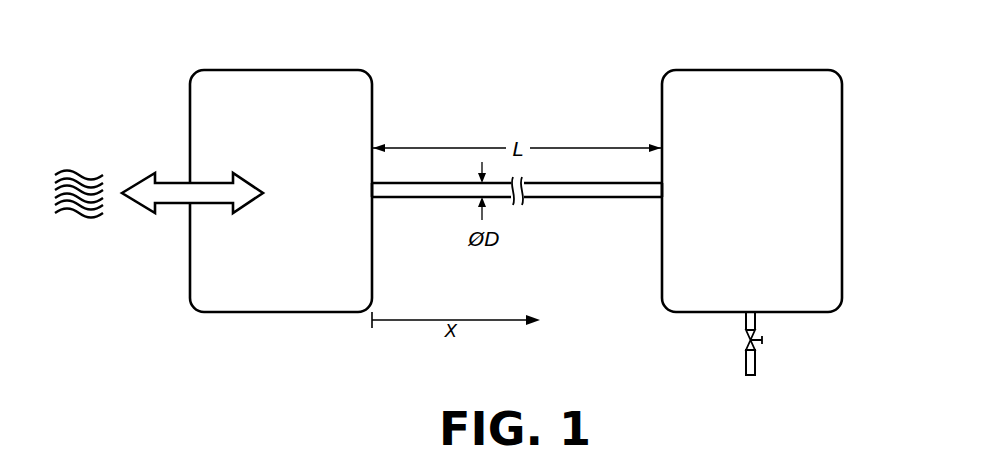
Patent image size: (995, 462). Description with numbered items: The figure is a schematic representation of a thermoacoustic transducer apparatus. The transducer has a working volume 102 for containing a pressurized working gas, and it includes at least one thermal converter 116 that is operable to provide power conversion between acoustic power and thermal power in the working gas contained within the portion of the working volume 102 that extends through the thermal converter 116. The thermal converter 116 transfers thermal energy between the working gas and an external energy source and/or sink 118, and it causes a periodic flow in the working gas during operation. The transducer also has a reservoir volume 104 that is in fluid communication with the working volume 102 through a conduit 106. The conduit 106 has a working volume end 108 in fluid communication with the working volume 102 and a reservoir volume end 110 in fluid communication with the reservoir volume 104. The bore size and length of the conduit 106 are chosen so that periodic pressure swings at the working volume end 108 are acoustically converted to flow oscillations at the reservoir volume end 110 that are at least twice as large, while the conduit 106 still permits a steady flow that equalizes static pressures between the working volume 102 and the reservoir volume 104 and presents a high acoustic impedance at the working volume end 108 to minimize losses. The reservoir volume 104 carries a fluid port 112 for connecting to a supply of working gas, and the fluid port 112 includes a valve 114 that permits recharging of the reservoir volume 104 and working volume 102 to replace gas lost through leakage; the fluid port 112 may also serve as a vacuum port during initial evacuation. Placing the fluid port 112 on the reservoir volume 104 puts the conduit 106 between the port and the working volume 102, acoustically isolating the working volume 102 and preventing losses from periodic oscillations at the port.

The working volume 102 is at (277, 70).
The reservoir volume 104 is at (753, 70).
The conduit 106 is at (568, 198).
The working volume end 108 is at (373, 199).
The reservoir volume end 110 is at (661, 199).
The fluid port 112 is at (751, 355).
The valve 114 is at (758, 342).
The thermal converter 116 is at (178, 183).
The external energy source and/or sink 118 is at (81, 215).